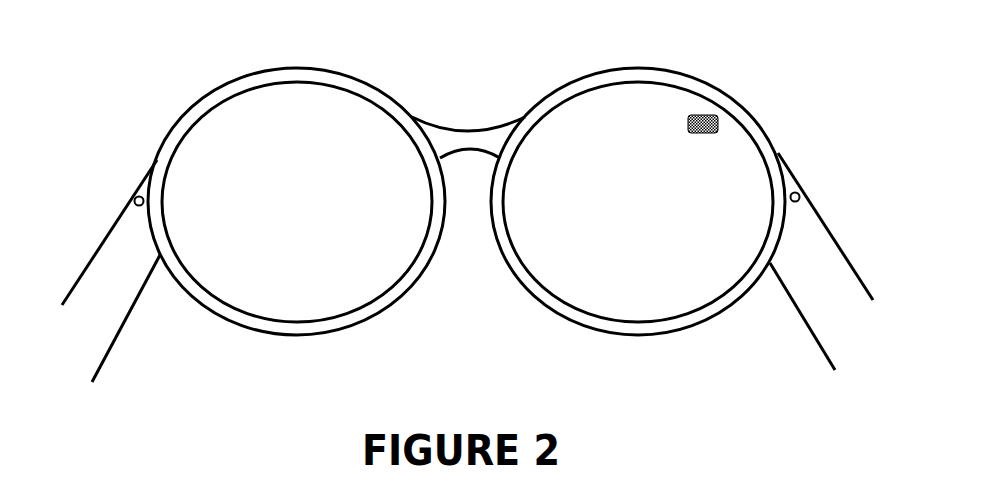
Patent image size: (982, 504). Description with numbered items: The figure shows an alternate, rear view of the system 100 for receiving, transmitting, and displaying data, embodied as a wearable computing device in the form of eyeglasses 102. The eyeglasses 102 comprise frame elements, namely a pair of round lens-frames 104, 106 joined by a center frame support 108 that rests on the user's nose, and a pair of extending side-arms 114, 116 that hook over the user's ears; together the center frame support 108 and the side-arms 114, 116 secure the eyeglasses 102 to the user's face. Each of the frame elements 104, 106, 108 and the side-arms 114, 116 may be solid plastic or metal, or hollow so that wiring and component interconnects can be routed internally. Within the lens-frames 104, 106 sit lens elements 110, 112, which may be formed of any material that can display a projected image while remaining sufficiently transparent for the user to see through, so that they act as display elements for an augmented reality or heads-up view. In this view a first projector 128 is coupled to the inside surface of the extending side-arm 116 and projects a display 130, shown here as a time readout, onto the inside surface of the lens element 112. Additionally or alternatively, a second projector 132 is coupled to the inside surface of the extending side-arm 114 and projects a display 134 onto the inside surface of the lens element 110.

The system 100 is at (742, 411).
The eyeglasses 102 is at (172, 66).
The lens-frame 104 is at (727, 307).
The lens-frame 106 is at (187, 290).
The center frame support 108 is at (452, 133).
The lens element 110 is at (642, 298).
The lens element 112 is at (305, 302).
The extending side-arm 114 is at (822, 221).
The extending side-arm 116 is at (113, 226).
The first projector 128 is at (139, 195).
The display 130 is at (273, 117).
The second projector 132 is at (795, 191).
The display 134 is at (714, 133).